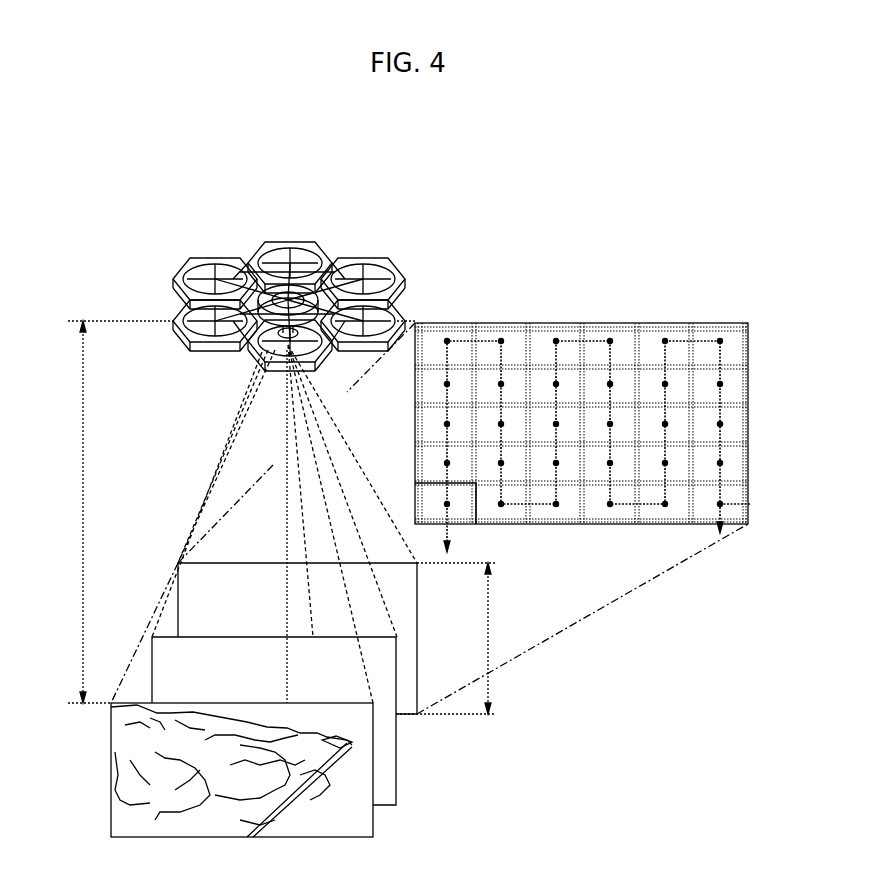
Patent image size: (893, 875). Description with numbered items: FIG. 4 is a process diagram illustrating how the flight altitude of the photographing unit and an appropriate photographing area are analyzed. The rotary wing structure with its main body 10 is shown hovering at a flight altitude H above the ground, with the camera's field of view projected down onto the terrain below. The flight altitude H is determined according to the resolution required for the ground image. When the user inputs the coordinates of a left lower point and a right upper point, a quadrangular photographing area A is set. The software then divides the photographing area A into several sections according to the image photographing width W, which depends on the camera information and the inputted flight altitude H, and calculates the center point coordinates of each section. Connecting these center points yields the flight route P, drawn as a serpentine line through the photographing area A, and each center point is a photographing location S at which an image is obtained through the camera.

The main body 10 is at (351, 245).
The photographing area A is at (668, 323).
The flight route P is at (725, 352).
The photographing location S is at (723, 422).
The flight altitude H is at (83, 506).
The image photographing width W is at (492, 638).